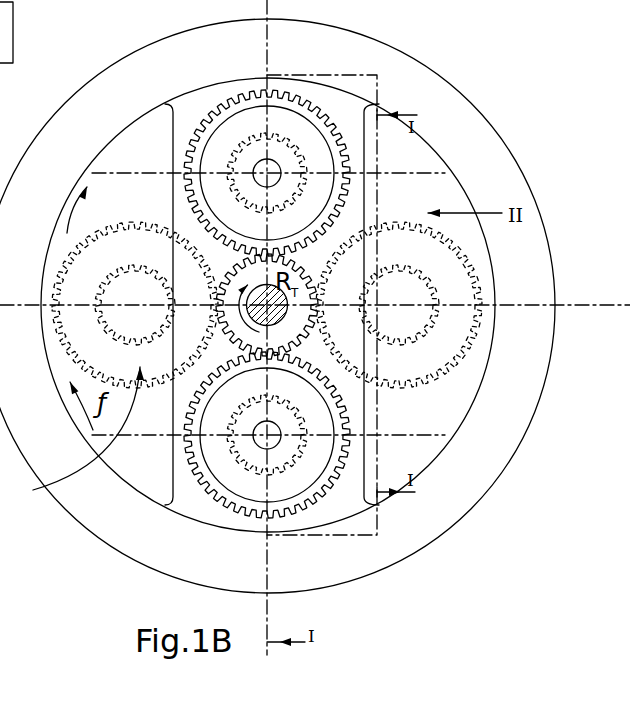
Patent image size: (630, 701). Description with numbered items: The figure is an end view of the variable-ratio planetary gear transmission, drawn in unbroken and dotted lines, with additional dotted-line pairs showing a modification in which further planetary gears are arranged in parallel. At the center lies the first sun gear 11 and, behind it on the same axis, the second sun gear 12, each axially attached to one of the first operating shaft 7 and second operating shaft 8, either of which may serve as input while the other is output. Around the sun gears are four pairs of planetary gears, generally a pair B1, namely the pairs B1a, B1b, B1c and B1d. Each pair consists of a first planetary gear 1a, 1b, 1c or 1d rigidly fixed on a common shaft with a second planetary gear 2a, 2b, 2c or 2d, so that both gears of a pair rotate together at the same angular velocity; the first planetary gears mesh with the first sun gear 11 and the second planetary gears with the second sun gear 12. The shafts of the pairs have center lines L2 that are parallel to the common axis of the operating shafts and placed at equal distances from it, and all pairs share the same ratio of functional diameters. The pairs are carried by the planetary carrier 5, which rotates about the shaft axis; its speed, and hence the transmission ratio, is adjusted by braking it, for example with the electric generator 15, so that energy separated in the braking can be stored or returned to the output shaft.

The first sun gear 11 is at (220, 263).
The second sun gear 12 is at (297, 288).
The electric generator 15 is at (518, 424).
The planetary carrier 5 is at (187, 502).
The first operating shaft 7 is at (412, 319).
The second operating shaft 8 is at (371, 304).
The pair of planetary gears B1 is at (387, 247).
The center line of planetary gear shaft L2 is at (270, 172).
The second planetary gear 2a is at (327, 433).
The first planetary gear 1a is at (270, 465).
The first pair of planetary gears B1a is at (262, 498).
The second planetary gear 2b is at (327, 175).
The first planetary gear 1b is at (266, 198).
The second pair of planetary gears B1b is at (262, 143).
The second planetary gear 2c is at (431, 257).
The first planetary gear 1c is at (413, 332).
The third pair of planetary gears B1c is at (422, 377).
The second planetary gear 2d is at (128, 366).
The first planetary gear 1d is at (148, 330).
The fourth pair of planetary gears B1d is at (150, 262).